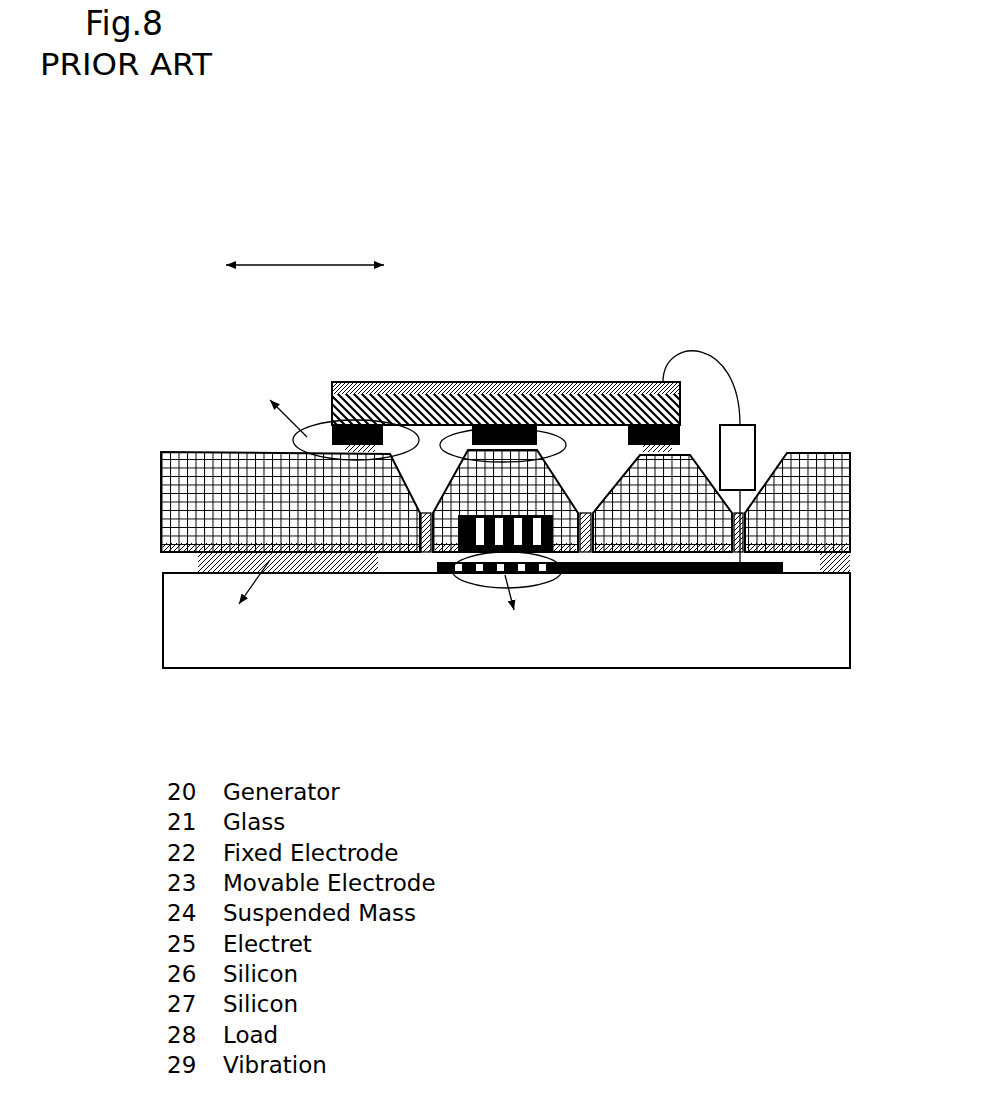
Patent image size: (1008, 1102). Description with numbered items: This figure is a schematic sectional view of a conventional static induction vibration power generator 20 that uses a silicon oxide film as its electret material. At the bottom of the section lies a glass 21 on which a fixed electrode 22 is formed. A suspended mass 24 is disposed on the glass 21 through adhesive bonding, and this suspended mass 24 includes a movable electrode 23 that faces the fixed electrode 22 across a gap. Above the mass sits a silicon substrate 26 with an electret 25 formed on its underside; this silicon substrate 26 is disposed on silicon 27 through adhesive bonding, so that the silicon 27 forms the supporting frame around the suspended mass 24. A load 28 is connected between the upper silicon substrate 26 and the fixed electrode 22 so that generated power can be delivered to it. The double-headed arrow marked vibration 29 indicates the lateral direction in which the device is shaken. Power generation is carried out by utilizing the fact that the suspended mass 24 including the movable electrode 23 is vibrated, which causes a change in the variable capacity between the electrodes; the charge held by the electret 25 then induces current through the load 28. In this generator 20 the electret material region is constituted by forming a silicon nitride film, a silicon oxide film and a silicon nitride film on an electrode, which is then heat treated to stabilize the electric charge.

The generator 20 is at (763, 277).
The glass 21 is at (763, 638).
The fixed electrode 22 is at (603, 575).
The movable electrode 23 is at (457, 550).
The suspended mass 24 is at (461, 557).
The electret 25 is at (505, 430).
The silicon substrate 26 is at (373, 398).
The silicon 27 is at (162, 458).
The load 28 is at (743, 457).
The vibration 29 is at (305, 247).